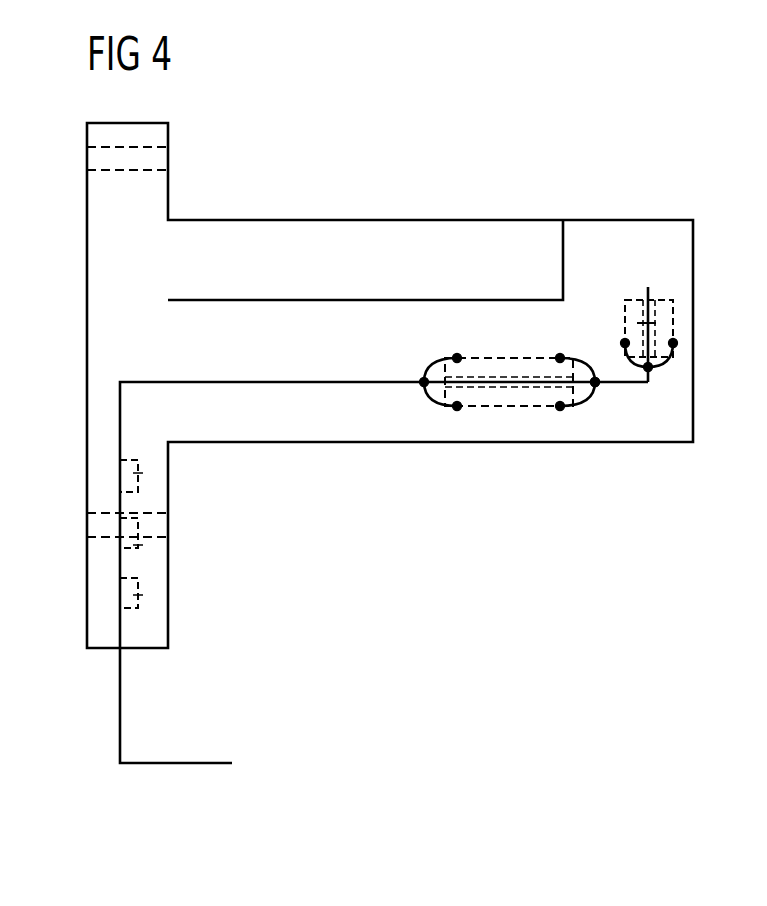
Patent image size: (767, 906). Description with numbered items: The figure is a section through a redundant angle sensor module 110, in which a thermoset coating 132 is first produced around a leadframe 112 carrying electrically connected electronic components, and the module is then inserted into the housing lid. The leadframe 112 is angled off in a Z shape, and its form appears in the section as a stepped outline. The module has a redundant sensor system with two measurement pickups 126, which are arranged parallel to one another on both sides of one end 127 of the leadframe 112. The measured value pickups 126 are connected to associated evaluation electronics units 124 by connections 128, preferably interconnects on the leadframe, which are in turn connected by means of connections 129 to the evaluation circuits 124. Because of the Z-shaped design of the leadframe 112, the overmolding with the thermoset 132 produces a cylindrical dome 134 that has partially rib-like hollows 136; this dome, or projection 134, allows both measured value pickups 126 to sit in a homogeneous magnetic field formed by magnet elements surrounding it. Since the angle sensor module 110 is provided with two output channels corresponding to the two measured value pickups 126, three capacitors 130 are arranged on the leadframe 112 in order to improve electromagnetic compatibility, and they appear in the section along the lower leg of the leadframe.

The redundant angle sensor module 110 is at (268, 214).
The leadframe 112 is at (272, 381).
The evaluation electronics unit 124 is at (473, 372).
The measurement pickup 126 is at (656, 323).
The end of leadframe 127 is at (650, 292).
The connection 128 is at (660, 366).
The connection 129 is at (598, 388).
The capacitor 130 is at (138, 595).
The thermoset coating 132 is at (158, 189).
The cylindrical dome 134 is at (615, 219).
The rib-like hollow 136 is at (422, 235).